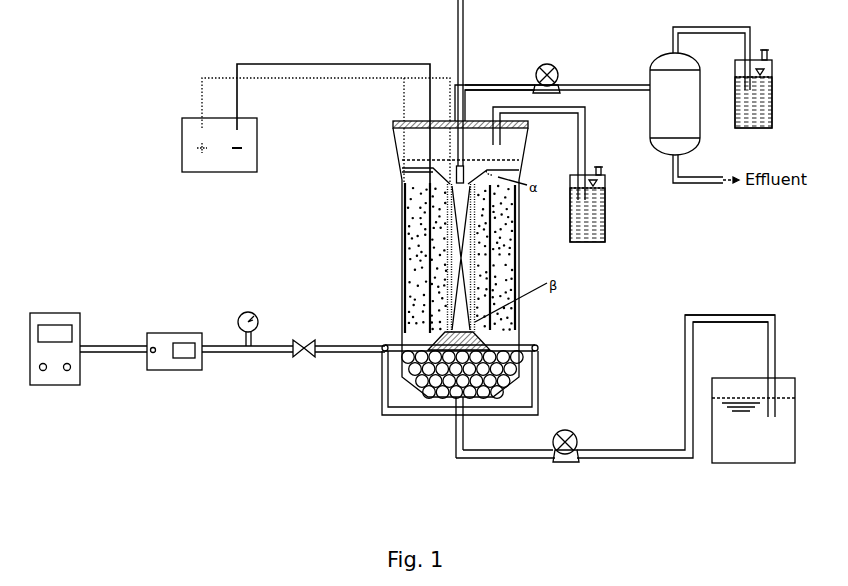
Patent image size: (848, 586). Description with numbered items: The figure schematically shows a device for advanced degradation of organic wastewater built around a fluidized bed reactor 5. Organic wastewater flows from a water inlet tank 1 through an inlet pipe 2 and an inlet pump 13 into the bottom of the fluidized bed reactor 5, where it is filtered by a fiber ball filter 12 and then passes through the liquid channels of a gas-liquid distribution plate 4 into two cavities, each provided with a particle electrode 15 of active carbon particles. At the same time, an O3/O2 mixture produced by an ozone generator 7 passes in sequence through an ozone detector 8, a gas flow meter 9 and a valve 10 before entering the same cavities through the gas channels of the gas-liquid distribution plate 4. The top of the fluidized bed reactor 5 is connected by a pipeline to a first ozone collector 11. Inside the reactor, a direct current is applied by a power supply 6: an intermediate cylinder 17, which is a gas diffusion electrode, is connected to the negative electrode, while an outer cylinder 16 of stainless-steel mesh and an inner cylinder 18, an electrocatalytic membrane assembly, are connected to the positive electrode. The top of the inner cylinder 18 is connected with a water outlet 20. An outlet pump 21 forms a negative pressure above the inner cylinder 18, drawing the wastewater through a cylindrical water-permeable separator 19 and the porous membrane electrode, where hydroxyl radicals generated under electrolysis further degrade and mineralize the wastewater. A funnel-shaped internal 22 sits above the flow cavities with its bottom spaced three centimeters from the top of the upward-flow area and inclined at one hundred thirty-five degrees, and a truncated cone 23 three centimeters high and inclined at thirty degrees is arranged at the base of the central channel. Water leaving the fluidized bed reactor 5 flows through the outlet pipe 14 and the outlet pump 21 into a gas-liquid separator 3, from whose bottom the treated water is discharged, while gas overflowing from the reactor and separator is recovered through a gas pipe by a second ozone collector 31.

The water inlet tank 1 is at (785, 445).
The inlet pipe 2 is at (730, 315).
The gas-liquid separator 3 is at (648, 73).
The gas-liquid distribution plate 4 is at (507, 345).
The fluidized bed reactor 5 is at (520, 275).
The power supply 6 is at (180, 118).
The ozone generator 7 is at (50, 312).
The ozone detector 8 is at (162, 332).
The gas flow meter 9 is at (242, 310).
The valve 10 is at (305, 338).
The first ozone collector 11 is at (605, 215).
The fiber ball filter 12 is at (510, 380).
The inlet pump 13 is at (573, 433).
The outlet pipe 14 is at (487, 83).
The particle electrode 15 is at (417, 303).
The outer cylinder 16 is at (408, 328).
The intermediate cylinder 17 is at (432, 262).
The inner cylinder 18 is at (462, 266).
The cylindrical water-permeable separator 19 is at (470, 233).
The water outlet 20 is at (464, 175).
The outlet pump 21 is at (555, 67).
The funnel-shaped internal 22 is at (415, 172).
The truncated cone 23 is at (473, 343).
The second ozone collector 31 is at (772, 85).